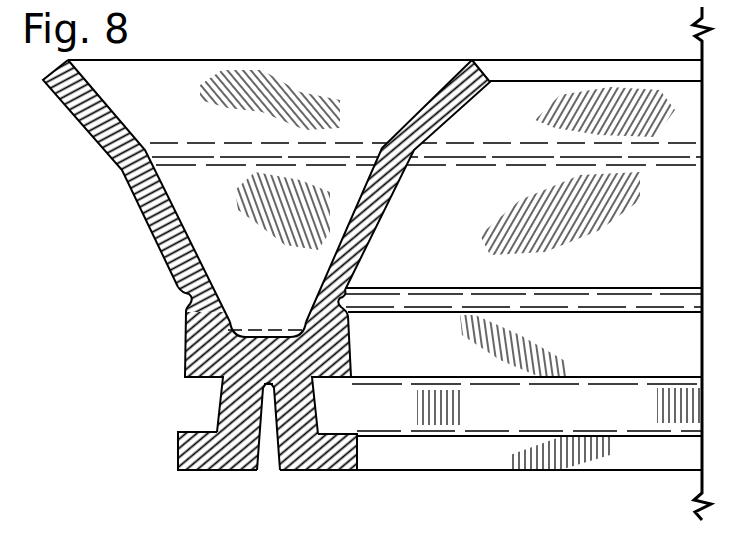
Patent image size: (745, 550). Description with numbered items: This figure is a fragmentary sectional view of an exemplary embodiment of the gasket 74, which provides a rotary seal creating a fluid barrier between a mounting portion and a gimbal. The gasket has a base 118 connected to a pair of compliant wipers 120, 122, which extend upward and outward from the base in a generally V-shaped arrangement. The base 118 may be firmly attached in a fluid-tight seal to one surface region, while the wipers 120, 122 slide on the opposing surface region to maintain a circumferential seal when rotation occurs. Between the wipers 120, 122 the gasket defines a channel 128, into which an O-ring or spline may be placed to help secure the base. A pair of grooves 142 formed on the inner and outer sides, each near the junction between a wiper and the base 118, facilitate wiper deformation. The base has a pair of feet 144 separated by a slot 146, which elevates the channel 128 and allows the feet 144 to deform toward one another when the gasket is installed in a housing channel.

The gasket 74 is at (80, 256).
The base 118 is at (183, 360).
The wiper 120 is at (75, 116).
The wiper 122 is at (452, 118).
The channel 128 is at (308, 320).
The groove 142 is at (182, 296).
The foot 144 is at (178, 456).
The slot 146 is at (274, 462).